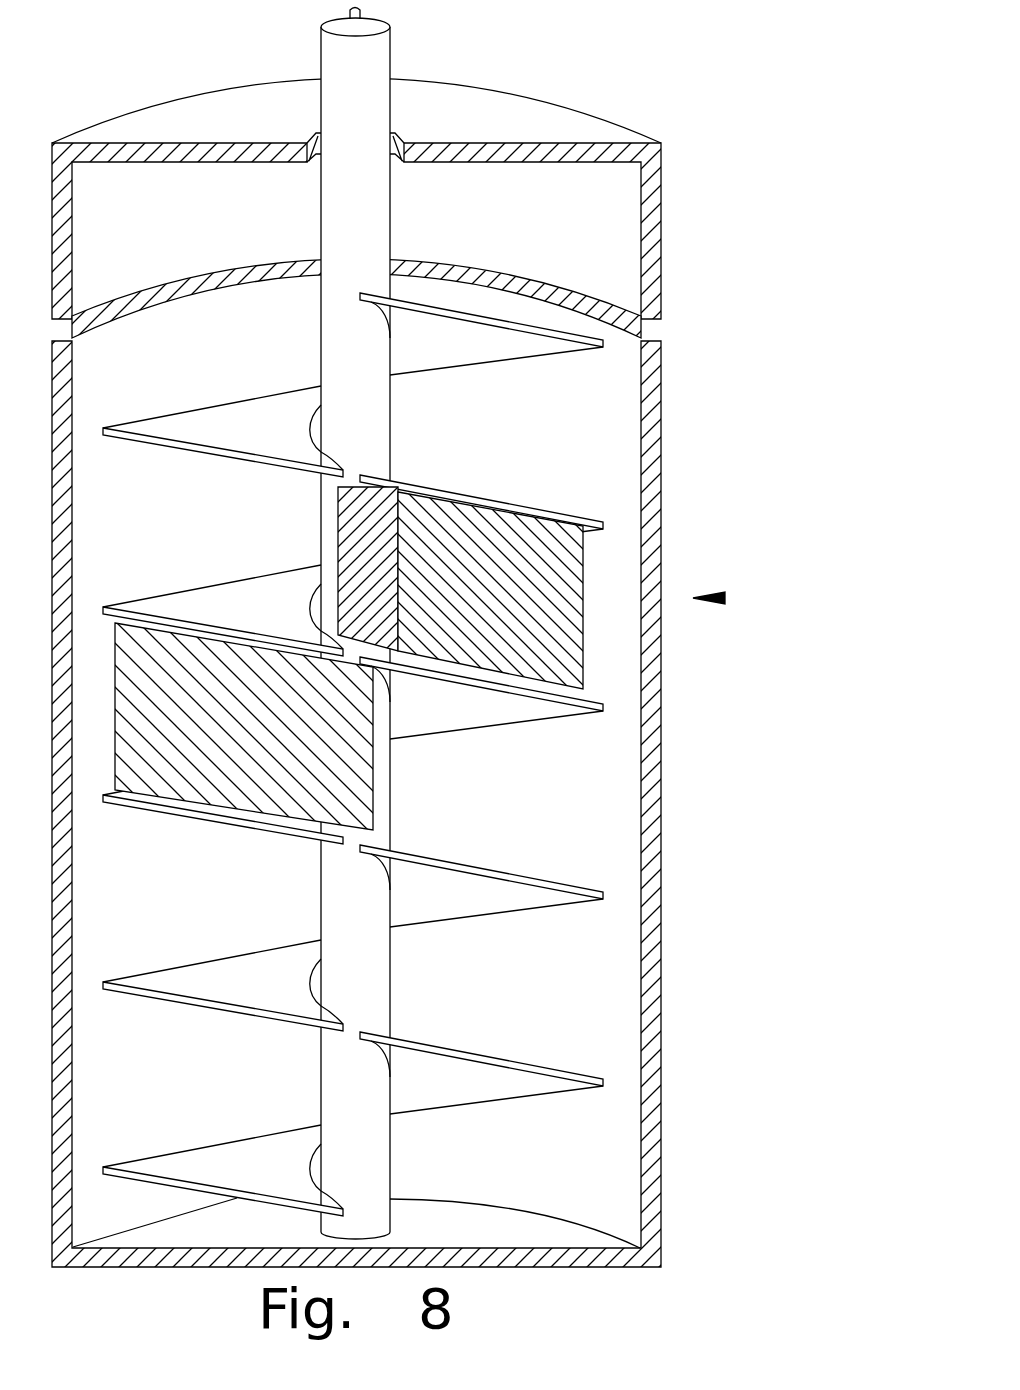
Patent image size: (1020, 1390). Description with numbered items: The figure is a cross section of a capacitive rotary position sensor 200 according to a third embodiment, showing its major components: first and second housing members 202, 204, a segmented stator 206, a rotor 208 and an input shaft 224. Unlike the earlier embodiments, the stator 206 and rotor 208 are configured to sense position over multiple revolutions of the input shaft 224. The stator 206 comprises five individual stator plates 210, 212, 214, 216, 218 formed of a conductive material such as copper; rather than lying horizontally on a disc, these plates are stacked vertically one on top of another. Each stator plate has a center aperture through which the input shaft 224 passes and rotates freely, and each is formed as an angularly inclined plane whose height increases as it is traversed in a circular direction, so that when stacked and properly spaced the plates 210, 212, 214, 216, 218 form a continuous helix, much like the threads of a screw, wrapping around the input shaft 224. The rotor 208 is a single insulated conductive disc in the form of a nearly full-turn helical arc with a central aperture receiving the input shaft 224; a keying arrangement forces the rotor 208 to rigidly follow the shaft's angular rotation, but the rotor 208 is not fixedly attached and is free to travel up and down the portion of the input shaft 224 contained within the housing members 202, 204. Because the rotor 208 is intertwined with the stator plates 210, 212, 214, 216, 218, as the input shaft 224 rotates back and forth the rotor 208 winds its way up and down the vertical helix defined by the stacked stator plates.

The position sensor 200 is at (725, 598).
The first housing member 202 is at (661, 397).
The second housing member 204 is at (661, 212).
The segmented stator 206 is at (148, 997).
The rotor 208 is at (583, 573).
The stator plate 210 is at (502, 358).
The stator plate 212 is at (491, 1057).
The stator plate 214 is at (495, 867).
The stator plate 216 is at (503, 727).
The stator plate 218 is at (503, 500).
The input shaft 224 is at (390, 67).